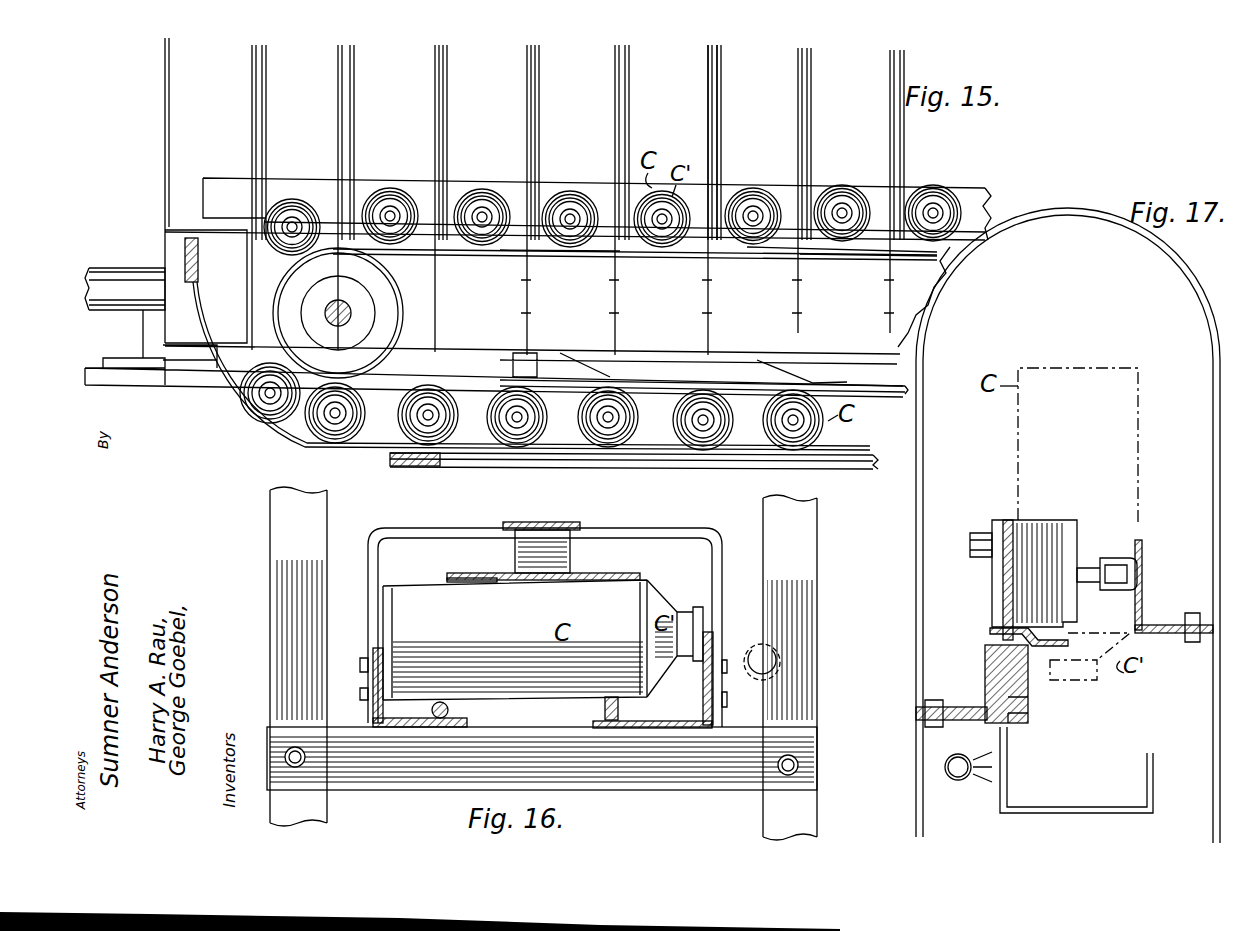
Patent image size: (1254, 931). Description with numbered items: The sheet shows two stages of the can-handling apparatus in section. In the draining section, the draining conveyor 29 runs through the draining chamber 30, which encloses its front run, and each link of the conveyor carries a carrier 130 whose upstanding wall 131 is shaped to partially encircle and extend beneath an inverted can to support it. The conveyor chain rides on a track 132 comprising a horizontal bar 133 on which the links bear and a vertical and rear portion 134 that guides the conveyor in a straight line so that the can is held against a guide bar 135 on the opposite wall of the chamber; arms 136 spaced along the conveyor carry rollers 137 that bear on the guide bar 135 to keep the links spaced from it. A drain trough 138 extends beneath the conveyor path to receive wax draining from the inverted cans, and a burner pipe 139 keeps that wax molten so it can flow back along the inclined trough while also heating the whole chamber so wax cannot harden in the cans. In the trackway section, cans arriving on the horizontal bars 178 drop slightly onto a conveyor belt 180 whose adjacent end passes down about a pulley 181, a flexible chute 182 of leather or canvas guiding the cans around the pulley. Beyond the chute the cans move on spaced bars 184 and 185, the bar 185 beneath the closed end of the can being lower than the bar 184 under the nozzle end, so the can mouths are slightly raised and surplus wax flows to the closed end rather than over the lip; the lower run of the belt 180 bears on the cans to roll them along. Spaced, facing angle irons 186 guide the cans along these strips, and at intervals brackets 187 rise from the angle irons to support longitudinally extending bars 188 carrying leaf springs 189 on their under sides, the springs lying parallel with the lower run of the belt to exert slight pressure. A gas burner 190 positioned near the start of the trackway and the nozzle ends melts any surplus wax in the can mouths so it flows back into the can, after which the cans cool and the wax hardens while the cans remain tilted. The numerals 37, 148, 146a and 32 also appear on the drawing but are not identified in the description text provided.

In FIG. 15, the upper guide rollers 37 is at (466, 186).
In FIG. 15, the vertical guide rod 148 is at (720, 125).
In FIG. 15, the vertical guide rod 146a is at (720, 179).
In FIG. 15, the horizontal bars 178 is at (790, 259).
In FIG. 15, the conveyor belt 180 is at (552, 259).
In FIG. 16, the conveyor belt 180 is at (600, 579).
In FIG. 15, the pulley 181 is at (297, 273).
In FIG. 15, the chute 182 is at (216, 393).
In FIG. 15, the leaf springs 189 is at (603, 373).
In FIG. 16, the leaf springs 189 is at (560, 549).
In FIG. 15, the plate 32 is at (658, 386).
In FIG. 16, the plate 32 is at (468, 575).
In FIG. 15, the bar 185 is at (565, 451).
In FIG. 16, the bar 185 is at (445, 703).
In FIG. 16, the brackets 187 is at (722, 579).
In FIG. 16, the angle irons 186 is at (467, 723).
In FIG. 16, the longitudinally extending bars 188 is at (558, 523).
In FIG. 16, the bar 184 is at (605, 716).
In FIG. 16, the gas burner 190 is at (750, 649).
In FIG. 17, the upstanding wall 131 is at (992, 583).
In FIG. 17, the vertical and rear portion 134 is at (990, 628).
In FIG. 17, the carrier 130 is at (990, 641).
In FIG. 17, the track 132 is at (985, 684).
In FIG. 17, the horizontal bar 133 is at (1028, 699).
In FIG. 17, the draining conveyor 29 is at (1028, 719).
In FIG. 17, the draining chamber 30 is at (916, 646).
In FIG. 17, the arms 136 is at (1085, 569).
In FIG. 17, the rollers 137 is at (1142, 561).
In FIG. 17, the guide bar 135 is at (1142, 596).
In FIG. 17, the drain trough 138 is at (1150, 766).
In FIG. 17, the burner pipe 139 is at (955, 783).